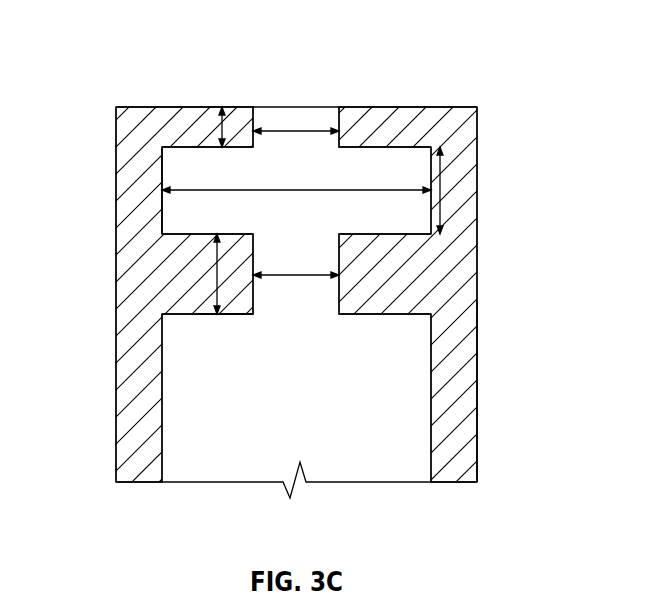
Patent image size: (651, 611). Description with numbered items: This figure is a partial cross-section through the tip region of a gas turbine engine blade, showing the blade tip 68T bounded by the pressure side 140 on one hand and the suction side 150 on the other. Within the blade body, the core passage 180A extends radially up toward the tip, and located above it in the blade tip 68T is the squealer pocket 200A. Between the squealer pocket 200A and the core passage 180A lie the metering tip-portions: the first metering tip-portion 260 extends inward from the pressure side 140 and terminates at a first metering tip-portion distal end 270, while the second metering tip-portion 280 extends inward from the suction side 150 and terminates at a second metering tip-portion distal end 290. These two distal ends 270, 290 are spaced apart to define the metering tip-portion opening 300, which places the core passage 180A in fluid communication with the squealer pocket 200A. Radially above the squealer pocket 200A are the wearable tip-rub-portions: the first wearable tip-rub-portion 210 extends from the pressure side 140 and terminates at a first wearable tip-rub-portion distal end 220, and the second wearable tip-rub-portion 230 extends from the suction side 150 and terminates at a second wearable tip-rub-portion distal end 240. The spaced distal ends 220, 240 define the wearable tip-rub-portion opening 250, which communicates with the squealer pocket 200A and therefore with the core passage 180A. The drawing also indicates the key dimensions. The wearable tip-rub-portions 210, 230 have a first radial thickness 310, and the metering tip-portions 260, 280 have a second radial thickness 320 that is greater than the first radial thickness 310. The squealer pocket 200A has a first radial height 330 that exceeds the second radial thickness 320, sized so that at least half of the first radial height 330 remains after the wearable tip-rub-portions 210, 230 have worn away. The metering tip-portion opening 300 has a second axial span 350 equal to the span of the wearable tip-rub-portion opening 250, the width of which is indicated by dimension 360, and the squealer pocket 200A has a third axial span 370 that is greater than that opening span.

The blade tip 68T is at (442, 44).
The first wearable tip-rub-portion 210 is at (150, 107).
The first wearable tip-rub-portion distal end 220 is at (250, 107).
The wearable tip-rub-portion opening 250 is at (298, 108).
The second wearable tip-rub-portion distal end 240 is at (340, 107).
The second wearable tip-rub-portion 230 is at (450, 113).
The pressure side 140 is at (115, 247).
The first squealer pocket 200A is at (153, 205).
The first metering tip-portion 260 is at (153, 307).
The first metering tip-portion distal end 270 is at (227, 317).
The second metering tip-portion distal end 290 is at (360, 258).
The second metering tip-portion 280 is at (442, 248).
The suction side 150 is at (478, 443).
The first core passage 180A is at (345, 462).
The metering tip-portion opening 300 is at (322, 363).
The first radial thickness 310 is at (215, 120).
The slot width 360 is at (283, 138).
The third axial span 370 is at (300, 198).
The second axial span 350 is at (283, 282).
The second radial thickness 320 is at (212, 272).
The first radial height 330 is at (445, 182).